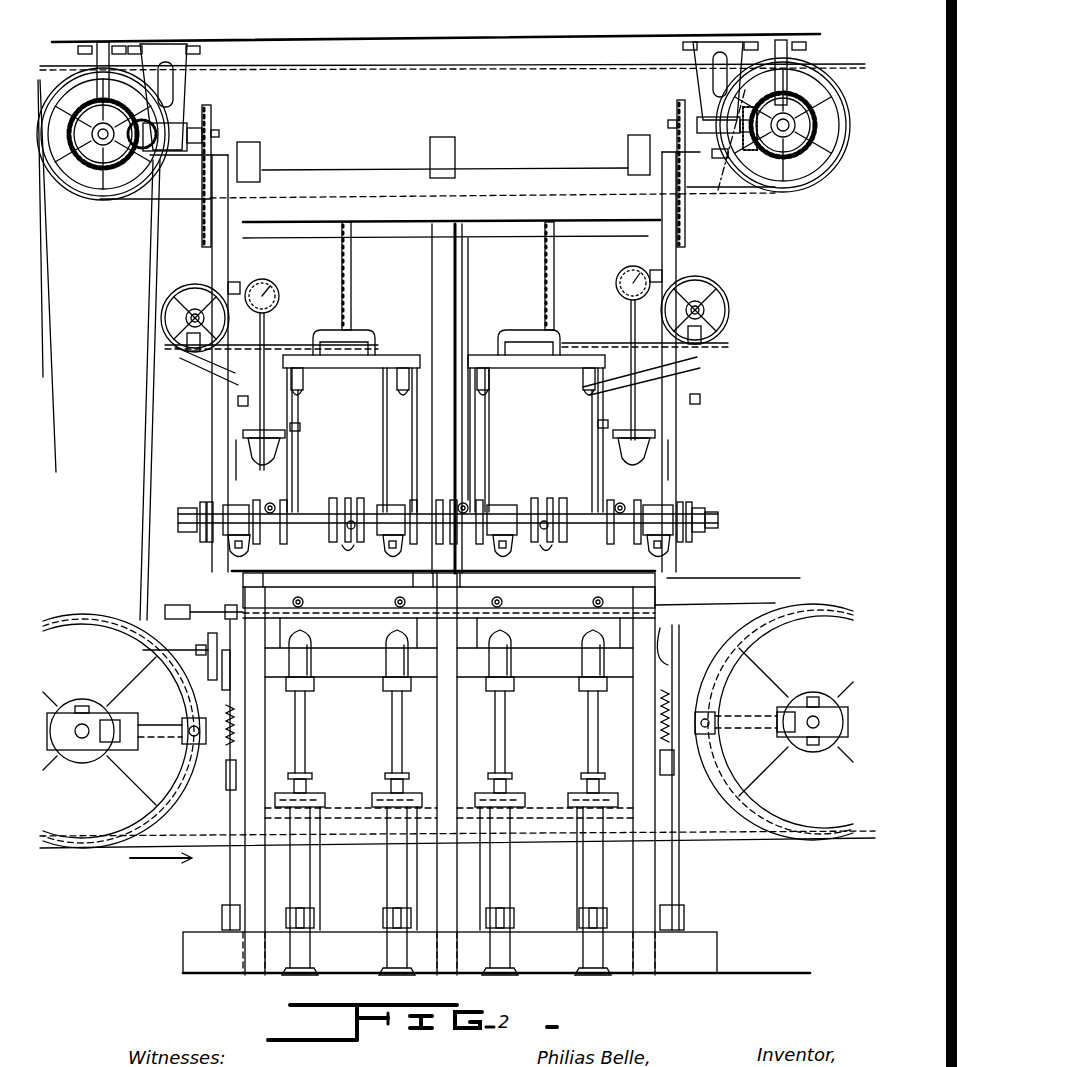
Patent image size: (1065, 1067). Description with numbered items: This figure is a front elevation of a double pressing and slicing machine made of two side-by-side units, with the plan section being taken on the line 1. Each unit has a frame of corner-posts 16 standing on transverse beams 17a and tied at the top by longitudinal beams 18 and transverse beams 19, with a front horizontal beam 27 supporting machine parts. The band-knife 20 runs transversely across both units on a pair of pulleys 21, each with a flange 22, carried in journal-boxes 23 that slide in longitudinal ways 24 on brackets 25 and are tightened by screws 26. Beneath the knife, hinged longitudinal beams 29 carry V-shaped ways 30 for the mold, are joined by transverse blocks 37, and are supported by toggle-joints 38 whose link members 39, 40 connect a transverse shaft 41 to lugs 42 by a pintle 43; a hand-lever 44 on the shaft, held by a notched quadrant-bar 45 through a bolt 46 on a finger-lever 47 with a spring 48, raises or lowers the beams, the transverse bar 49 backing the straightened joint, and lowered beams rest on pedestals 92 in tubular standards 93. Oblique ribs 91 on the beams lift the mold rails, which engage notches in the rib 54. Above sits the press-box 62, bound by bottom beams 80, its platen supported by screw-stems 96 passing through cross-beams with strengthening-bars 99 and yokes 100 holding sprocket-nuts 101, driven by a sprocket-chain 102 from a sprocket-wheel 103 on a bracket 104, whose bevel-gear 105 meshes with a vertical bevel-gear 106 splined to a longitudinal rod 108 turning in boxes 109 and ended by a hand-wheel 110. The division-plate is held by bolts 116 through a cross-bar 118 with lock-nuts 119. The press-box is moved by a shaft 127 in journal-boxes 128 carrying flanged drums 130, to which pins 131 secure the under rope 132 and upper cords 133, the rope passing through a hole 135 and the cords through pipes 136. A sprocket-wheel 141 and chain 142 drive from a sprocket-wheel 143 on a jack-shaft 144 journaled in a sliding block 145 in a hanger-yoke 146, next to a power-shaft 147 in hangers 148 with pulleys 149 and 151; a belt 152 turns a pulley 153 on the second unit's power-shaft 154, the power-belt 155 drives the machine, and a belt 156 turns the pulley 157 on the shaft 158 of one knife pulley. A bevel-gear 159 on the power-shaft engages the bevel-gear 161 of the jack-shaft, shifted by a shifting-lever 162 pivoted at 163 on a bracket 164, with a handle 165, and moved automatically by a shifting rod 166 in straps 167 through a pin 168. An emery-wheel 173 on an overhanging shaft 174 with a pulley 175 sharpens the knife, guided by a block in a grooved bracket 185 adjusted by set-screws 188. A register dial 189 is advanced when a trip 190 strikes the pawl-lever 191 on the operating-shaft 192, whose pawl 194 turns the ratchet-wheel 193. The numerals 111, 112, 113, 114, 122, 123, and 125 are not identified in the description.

The section line 1 is at (160, 238).
The corner-posts 16 is at (248, 867).
The transverse beams 17a is at (707, 950).
The longitudinal beams 18 is at (262, 157).
The transverse beams 19 is at (482, 232).
The band-knife 20 is at (737, 840).
The pulleys 21 is at (147, 760).
The flange 22 is at (70, 852).
The journal-boxes 23 is at (88, 765).
The longitudinal ways 24 is at (88, 713).
The brackets 25 is at (180, 780).
The screws 26 is at (167, 740).
The horizontal beam 27 is at (652, 567).
The longitudinal beams 29 is at (308, 670).
The V-shaped ways 30 is at (303, 638).
The transverse blocks 37 is at (454, 741).
The toggle-joints 38 is at (388, 753).
The lower link member 39 is at (413, 857).
The upper link member 40 is at (308, 743).
The transverse shaft 41 is at (346, 930).
The lugs 42 is at (303, 702).
The pintle 43 is at (290, 689).
The hand-lever 44 is at (228, 897).
The notched quadrant-bar 45 is at (232, 780).
The bolt 46 is at (232, 763).
The finger-lever 47 is at (668, 655).
The spring 48 is at (231, 730).
The transverse bar 49 is at (347, 822).
The rib 54 is at (362, 627).
The press-box 62 is at (442, 456).
The beams 80 is at (442, 579).
The oblique ribs 91 is at (373, 658).
The pedestals 92 is at (315, 777).
The tubular standards 93 is at (413, 870).
The screw-stems 96 is at (352, 262).
The steel strengthening-bars 99 is at (350, 368).
The steel yoke 100 is at (367, 332).
The sprocket-nut 101 is at (372, 347).
The sprocket-chain 102 is at (304, 350).
The sprocket-wheel 103 is at (172, 350).
The laterally-projecting bracket 104 is at (213, 387).
The bevel-gear 105 is at (173, 342).
The vertical bevel-gear 106 is at (175, 317).
The longitudinal rod 108 is at (173, 315).
The boxes 109 is at (266, 326).
The hand-wheel 110 is at (183, 330).
The stem 111 is at (703, 333).
The clamp 112 is at (295, 395).
The clamp 113 is at (397, 382).
The rod 114 is at (410, 382).
The bolts 116 is at (292, 602).
The cross-bar 118 is at (335, 600).
The lock-nuts 119 is at (491, 602).
The rod 122 is at (388, 458).
The top rail 123 is at (396, 362).
The top rail 125 is at (507, 335).
The shaft 127 is at (720, 516).
The journal-boxes 128 is at (236, 512).
The flanged drums 130 is at (450, 498).
The pins 131 is at (430, 500).
The under rope 132 is at (350, 500).
The upper cords 133 is at (276, 500).
The hole 135 is at (350, 545).
The pipes 136 is at (265, 500).
The sprocket-wheel 141 is at (198, 530).
The chain 142 is at (212, 255).
The sprocket-wheel 143 is at (212, 115).
The jack-shaft 144 is at (220, 133).
The sliding block 145 is at (188, 122).
The hanger-yoke 146 is at (188, 57).
The power-shaft 147 is at (101, 148).
The hangers 148 is at (97, 60).
The pulley 149 is at (103, 202).
The pulley 151 is at (160, 60).
The belt 152 is at (430, 70).
The pulley 153 is at (813, 187).
The power-shaft 154 is at (786, 123).
The power-belt 155 is at (60, 475).
The belt 156 is at (143, 515).
The pulley 157 is at (66, 690).
The shaft 158 is at (123, 660).
The bevel-gear 159 is at (107, 200).
The bevel-gear 161 is at (212, 200).
The shifting-lever 162 is at (230, 212).
The pivot 163 is at (227, 275).
The bracket 164 is at (242, 280).
The handle 165 is at (233, 463).
The shifting rod 166 is at (235, 470).
The straps 167 is at (237, 437).
The pin 168 is at (233, 427).
The emery-wheel 173 is at (210, 665).
The overhanging shaft 174 is at (160, 646).
The pulley 175 is at (226, 682).
The grooved bracket 185 is at (197, 613).
The set-screws 188 is at (173, 608).
The dial 189 is at (266, 280).
The trip 190 is at (302, 426).
The pawl-lever 191 is at (285, 434).
The operating-shaft 192 is at (266, 303).
The ratchet-wheel 193 is at (250, 380).
The pawl 194 is at (280, 456).